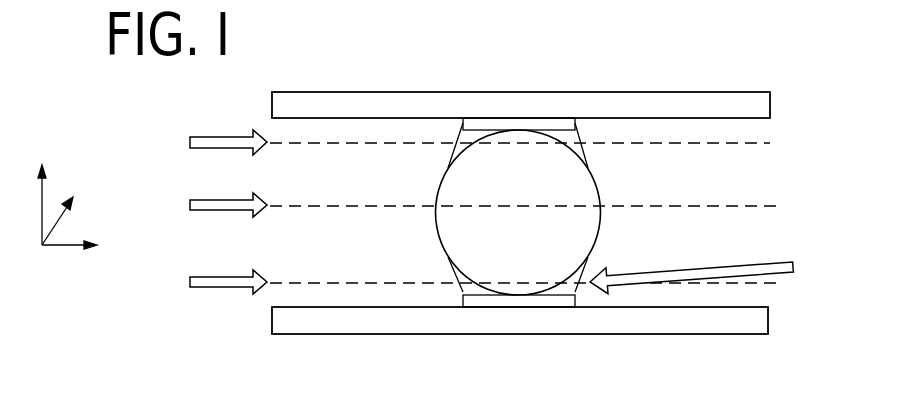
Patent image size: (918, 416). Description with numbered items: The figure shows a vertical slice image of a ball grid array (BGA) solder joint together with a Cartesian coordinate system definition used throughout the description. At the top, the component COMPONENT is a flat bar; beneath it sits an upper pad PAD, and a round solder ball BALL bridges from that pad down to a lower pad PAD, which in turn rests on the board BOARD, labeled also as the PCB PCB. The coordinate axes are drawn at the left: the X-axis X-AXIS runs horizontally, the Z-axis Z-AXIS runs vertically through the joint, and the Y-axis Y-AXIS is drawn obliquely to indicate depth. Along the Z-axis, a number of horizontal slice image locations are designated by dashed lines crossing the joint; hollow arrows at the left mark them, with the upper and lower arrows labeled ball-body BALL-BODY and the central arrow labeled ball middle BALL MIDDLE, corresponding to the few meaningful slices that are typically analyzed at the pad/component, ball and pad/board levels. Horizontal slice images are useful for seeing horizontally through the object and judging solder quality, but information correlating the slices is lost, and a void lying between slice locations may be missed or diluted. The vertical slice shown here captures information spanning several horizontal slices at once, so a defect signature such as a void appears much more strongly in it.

The component COMPONENT is at (773, 68).
The pad PAD is at (565, 125).
The ball BALL is at (570, 198).
The board BOARD is at (560, 323).
The element PCB is at (797, 305).
The ball-body slice BALL-BODY is at (209, 212).
The ball middle slice BALL MIDDLE is at (202, 217).
The Z-axis Z-AXIS is at (66, 192).
The Y-axis Y-AXIS is at (92, 210).
The X-axis X-AXIS is at (106, 251).